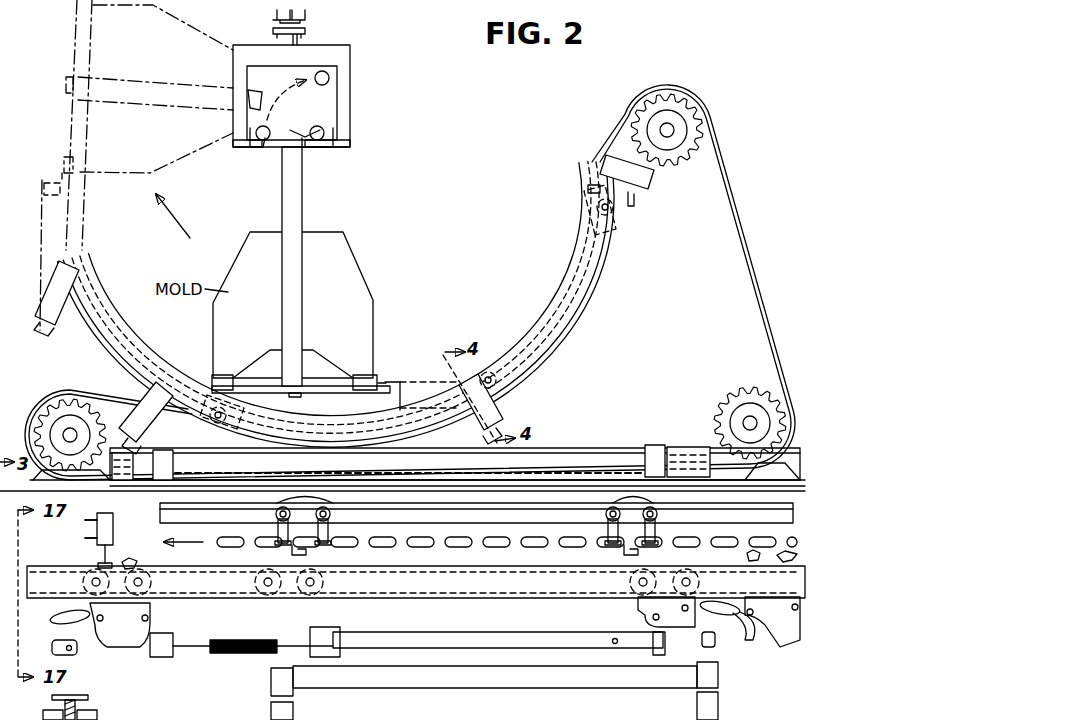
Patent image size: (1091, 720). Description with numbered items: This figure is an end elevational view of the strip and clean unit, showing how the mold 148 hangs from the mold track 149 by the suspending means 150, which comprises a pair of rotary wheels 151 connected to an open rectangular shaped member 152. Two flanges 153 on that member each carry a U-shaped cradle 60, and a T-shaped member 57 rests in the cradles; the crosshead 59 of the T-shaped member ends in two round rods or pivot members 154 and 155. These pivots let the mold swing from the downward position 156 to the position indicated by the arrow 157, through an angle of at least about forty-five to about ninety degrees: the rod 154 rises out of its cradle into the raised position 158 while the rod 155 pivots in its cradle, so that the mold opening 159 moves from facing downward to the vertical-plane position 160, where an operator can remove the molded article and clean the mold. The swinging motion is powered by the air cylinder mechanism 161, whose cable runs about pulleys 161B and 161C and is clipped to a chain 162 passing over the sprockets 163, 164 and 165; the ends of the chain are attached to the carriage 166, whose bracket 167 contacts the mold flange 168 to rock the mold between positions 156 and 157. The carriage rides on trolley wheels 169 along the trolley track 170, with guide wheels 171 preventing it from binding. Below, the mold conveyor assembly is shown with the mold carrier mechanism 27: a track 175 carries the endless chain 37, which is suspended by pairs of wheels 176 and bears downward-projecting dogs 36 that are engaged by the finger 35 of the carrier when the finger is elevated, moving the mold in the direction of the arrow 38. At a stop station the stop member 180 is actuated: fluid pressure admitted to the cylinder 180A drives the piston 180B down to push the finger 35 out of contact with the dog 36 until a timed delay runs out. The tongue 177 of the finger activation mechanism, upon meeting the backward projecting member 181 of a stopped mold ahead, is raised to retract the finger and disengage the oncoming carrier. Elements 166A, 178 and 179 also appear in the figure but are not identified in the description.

The mold suspending means 150 is at (308, 33).
The raised rod position 158 is at (333, 65).
The open rectangular shaped member 152 is at (345, 93).
The pivot member 155 is at (325, 130).
The U-shaped cradle 60 is at (350, 144).
The crosshead 59 is at (295, 132).
The pivot member 154 is at (265, 141).
The flanges 153 is at (295, 147).
The T-shaped member 57 is at (302, 212).
The mold 148 is at (347, 275).
The vertical-plane position of mold opening 160 is at (72, 55).
The mold flange 168 is at (62, 173).
The bracket 167 is at (45, 192).
The rotated mold position 157 is at (113, 174).
The original mold position 156 is at (213, 320).
The mold opening 159 is at (320, 393).
The pallet carriage 166A is at (238, 404).
The pulley 161B is at (150, 455).
The chain 162 is at (100, 395).
The sprocket 163 is at (55, 410).
The sprocket 164 is at (702, 130).
The sprocket 165 is at (722, 406).
The carriage 166 is at (531, 315).
The trolley wheels 169 is at (496, 383).
The trolley track 170 is at (565, 305).
The guide wheels 171 is at (520, 378).
The air cylinder mechanism 161 is at (595, 450).
The pulley 161C is at (672, 450).
The track 175 is at (445, 515).
The wheels 176 is at (276, 511).
The stop member 180 is at (104, 512).
The cylinder 180A is at (93, 527).
The piston 180B is at (100, 551).
The arrow 38 is at (187, 541).
The finger 35 is at (126, 568).
The dog 36 is at (296, 550).
The endless chain 37 is at (515, 548).
The tongue 177 is at (57, 610).
The rotary wheels 151 is at (151, 586).
The mold track 149 is at (412, 598).
The latch plate 178 is at (150, 615).
The pivot block 179 is at (70, 656).
The backward projecting member 181 is at (735, 645).
The mold carrier mechanism 27 is at (440, 690).